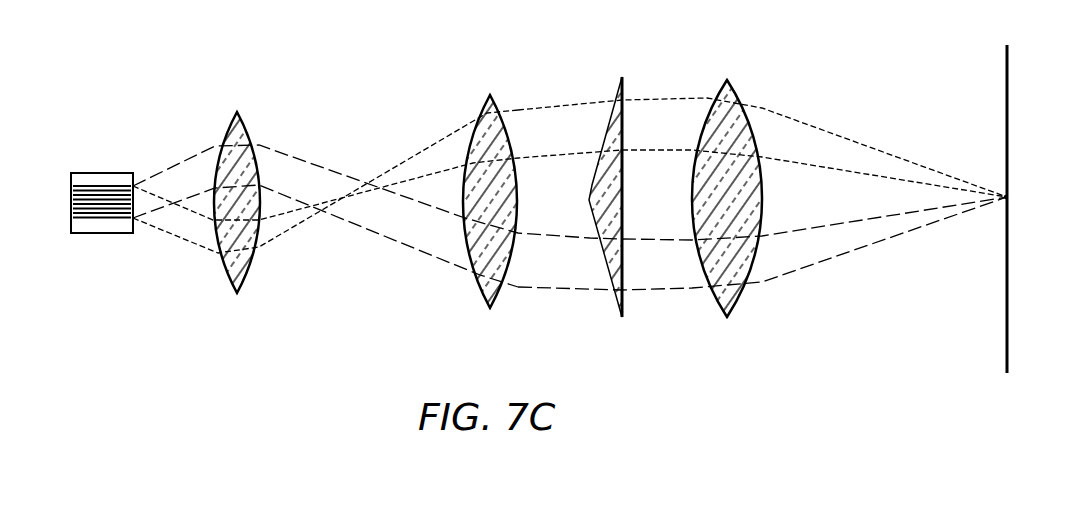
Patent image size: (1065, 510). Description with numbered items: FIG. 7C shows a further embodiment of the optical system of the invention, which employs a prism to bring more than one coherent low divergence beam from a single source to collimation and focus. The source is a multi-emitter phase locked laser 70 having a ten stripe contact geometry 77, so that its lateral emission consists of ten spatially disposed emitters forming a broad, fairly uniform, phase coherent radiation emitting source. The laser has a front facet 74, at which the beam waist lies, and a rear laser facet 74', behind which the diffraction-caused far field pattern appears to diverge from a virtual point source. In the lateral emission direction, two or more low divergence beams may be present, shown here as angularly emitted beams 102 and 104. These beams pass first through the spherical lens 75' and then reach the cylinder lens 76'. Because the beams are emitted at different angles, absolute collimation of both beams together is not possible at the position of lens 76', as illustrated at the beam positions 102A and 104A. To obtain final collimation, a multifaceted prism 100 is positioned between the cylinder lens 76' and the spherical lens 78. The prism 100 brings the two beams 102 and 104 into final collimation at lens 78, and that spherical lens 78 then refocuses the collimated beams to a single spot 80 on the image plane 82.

The multi-emitter phase locked laser 70 is at (80, 158).
The laser front facet 74 is at (118, 178).
The rear laser facet 74' is at (66, 241).
The ten stripe contact geometry 77 is at (105, 188).
The spherical lens 75' is at (246, 191).
The angularly emitted beam 102 is at (288, 156).
The beam position 102A is at (540, 290).
The angularly emitted beam 104 is at (274, 242).
The beam position 104A is at (578, 102).
The cylinder lens 76' is at (499, 180).
The multifaceted prism 100 is at (623, 90).
The spherical lens 78 is at (738, 102).
The spot 80 is at (1005, 198).
The image plane 82 is at (1007, 130).